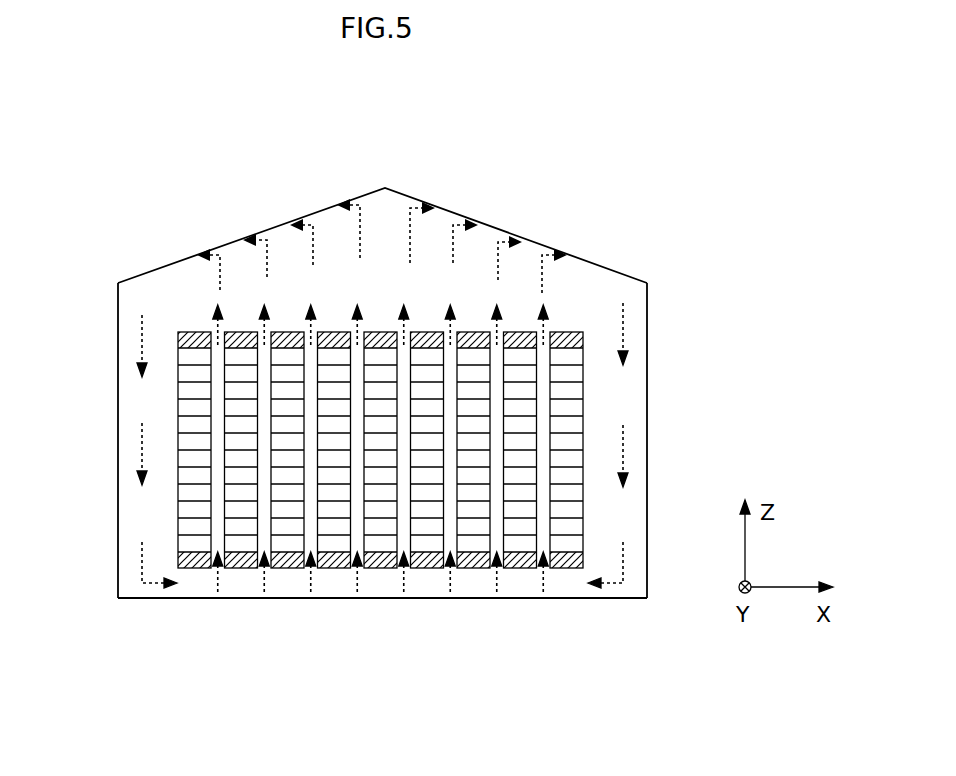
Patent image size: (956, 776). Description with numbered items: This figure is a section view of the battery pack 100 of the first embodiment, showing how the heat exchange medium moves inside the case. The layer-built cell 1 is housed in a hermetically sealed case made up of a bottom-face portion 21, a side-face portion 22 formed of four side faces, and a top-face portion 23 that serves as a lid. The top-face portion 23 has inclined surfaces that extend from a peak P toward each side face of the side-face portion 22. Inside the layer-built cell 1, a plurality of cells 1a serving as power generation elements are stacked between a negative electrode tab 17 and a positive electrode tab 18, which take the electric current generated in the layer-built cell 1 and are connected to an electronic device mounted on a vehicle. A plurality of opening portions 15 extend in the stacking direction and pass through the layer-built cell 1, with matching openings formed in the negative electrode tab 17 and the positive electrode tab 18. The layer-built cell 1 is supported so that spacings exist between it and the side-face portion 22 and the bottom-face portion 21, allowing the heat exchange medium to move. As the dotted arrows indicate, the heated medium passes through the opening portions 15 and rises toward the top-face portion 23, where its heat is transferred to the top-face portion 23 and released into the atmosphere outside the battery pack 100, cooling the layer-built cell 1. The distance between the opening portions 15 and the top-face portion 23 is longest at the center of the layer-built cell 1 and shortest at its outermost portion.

The battery pack 100 is at (378, 399).
The layer-built cell 1 is at (382, 435).
The cell 1a is at (573, 388).
The opening portion 15 is at (218, 440).
The negative electrode tab 17 is at (561, 333).
The positive electrode tab 18 is at (515, 565).
The bottom-face portion 21 is at (285, 600).
The side-face portion 22 is at (118, 352).
The top-face portion 23 is at (318, 210).
The peak P is at (385, 188).